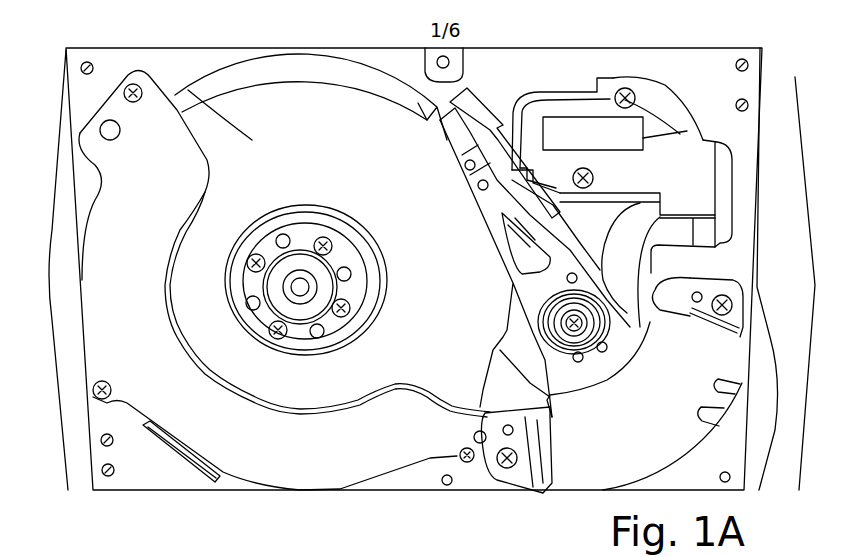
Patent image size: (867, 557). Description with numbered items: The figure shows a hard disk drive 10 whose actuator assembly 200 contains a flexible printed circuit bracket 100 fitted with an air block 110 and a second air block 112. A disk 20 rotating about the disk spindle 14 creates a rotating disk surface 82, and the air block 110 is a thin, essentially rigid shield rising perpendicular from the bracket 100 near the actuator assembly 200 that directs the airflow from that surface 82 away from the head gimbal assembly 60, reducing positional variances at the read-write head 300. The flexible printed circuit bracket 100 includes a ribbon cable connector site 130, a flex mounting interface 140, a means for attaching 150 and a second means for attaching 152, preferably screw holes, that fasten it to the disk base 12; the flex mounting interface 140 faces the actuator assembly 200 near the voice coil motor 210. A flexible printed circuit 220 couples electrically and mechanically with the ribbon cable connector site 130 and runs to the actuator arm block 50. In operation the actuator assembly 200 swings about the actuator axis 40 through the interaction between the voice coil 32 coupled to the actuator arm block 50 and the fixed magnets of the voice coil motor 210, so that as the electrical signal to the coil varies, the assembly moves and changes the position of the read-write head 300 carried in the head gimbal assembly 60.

The hard disk drive 10 is at (40, 270).
The disk base 12 is at (121, 48).
The disk spindle 14 is at (259, 250).
The disk 20 is at (303, 82).
The voice coil 32 is at (595, 385).
The actuator axis 40 is at (573, 326).
The actuator arm block 50 is at (537, 281).
The head gimbal assembly 60 is at (463, 157).
The rotating disk surface 82 is at (194, 101).
The flexible printed circuit bracket 100 is at (558, 95).
The air block 110 is at (487, 110).
The second air block 112 is at (702, 238).
The ribbon cable connector site 130 is at (681, 133).
The flex mounting interface 140 is at (684, 210).
The means for attaching 150 is at (675, 72).
The second means for attaching 152 is at (596, 182).
The actuator assembly 200 is at (819, 290).
The voice coil motor 210 is at (785, 387).
The flexible printed circuit 220 is at (594, 240).
The read-write head 300 is at (400, 106).